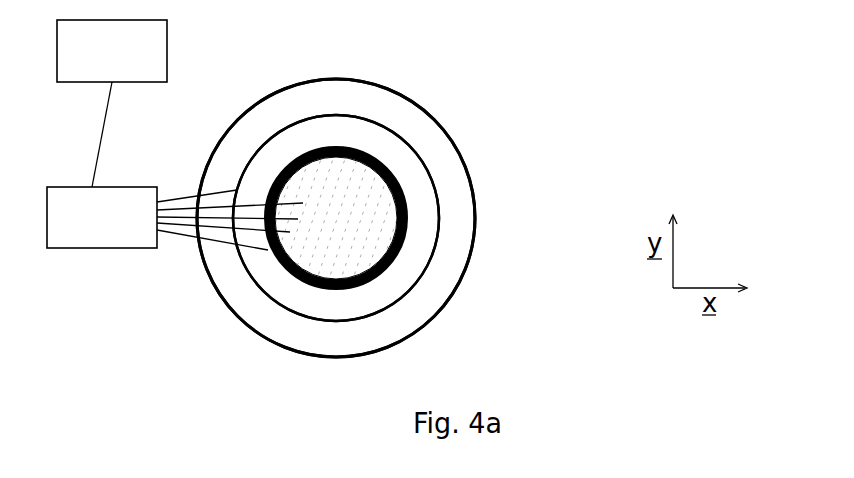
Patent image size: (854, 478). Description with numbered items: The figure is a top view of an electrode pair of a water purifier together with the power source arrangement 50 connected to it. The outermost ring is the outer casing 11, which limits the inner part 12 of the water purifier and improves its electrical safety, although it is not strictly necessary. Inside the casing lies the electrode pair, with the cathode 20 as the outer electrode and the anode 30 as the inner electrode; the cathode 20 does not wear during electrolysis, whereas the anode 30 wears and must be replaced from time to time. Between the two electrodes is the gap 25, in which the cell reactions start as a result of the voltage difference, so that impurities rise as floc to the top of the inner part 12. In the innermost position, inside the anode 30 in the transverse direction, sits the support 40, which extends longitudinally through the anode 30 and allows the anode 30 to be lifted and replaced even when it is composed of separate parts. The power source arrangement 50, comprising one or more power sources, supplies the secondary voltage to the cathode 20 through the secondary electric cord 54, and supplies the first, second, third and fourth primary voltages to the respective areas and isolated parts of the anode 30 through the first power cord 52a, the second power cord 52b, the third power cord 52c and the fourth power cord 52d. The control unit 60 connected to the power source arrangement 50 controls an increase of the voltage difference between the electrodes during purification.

The outer casing 11 is at (365, 80).
The inner part 12 is at (337, 110).
The cathode 20 is at (418, 157).
The gap 25 is at (345, 140).
The anode 30 is at (408, 203).
The support 40 is at (355, 230).
The power source arrangement 50 is at (109, 228).
The first power cord 52a is at (161, 232).
The second power cord 52b is at (168, 233).
The third power cord 52c is at (185, 233).
The fourth power cord 52d is at (195, 233).
The secondary electric cord 54 is at (183, 197).
The control unit 60 is at (117, 66).